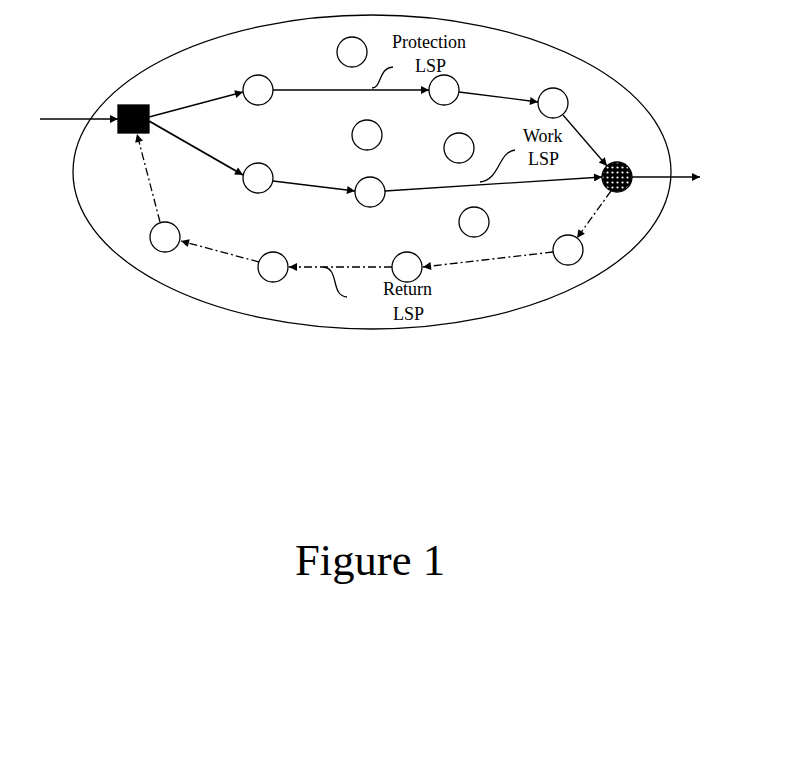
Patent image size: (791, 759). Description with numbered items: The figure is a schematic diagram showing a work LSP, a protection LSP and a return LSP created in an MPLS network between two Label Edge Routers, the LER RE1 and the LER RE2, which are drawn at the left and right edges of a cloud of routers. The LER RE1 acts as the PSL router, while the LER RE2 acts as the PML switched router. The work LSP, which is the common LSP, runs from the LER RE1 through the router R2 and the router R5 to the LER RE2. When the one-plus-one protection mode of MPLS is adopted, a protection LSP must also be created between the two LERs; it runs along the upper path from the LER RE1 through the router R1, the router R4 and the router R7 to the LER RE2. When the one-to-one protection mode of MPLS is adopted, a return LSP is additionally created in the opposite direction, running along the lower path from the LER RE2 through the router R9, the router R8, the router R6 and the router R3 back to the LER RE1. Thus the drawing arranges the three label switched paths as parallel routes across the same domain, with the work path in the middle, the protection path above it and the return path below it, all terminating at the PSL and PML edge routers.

The Label Edge Router RE1 is at (122, 122).
The Label Edge Router RE2 is at (633, 188).
The router R1 is at (258, 90).
The router R2 is at (258, 178).
The router R3 is at (165, 237).
The router R4 is at (444, 90).
The router R5 is at (370, 192).
The router R6 is at (273, 267).
The router R7 is at (553, 103).
The router R8 is at (407, 267).
The router R9 is at (568, 250).